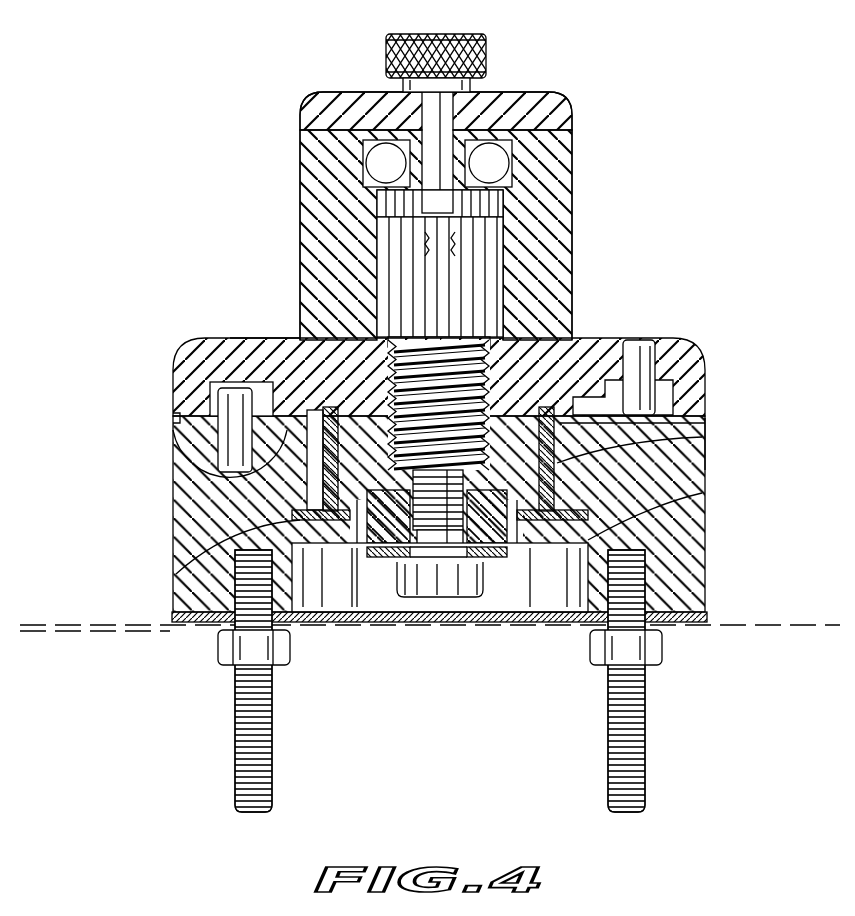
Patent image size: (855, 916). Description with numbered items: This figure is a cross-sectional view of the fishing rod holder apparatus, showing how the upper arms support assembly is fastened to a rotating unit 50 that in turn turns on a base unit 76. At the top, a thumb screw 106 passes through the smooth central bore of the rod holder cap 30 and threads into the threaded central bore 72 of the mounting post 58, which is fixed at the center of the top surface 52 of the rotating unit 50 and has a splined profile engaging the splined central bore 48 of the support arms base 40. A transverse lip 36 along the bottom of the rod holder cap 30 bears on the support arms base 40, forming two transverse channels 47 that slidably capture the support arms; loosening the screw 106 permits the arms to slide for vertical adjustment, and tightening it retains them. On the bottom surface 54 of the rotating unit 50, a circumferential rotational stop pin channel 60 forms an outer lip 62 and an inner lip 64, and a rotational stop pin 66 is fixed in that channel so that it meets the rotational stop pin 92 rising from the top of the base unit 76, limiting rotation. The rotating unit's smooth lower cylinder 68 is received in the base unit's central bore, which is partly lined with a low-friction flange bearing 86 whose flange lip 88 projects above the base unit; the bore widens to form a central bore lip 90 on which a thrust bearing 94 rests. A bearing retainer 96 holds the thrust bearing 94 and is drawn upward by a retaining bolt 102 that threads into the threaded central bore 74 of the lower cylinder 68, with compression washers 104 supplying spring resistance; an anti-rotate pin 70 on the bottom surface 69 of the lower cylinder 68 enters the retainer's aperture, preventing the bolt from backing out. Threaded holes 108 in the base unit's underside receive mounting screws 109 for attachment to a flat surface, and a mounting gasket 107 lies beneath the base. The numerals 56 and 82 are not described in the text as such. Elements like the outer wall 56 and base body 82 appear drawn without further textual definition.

The thumb screw 106 is at (488, 51).
The transverse channels 47 is at (456, 150).
The transverse lip 36 is at (558, 106).
The rod holder cap 30 is at (575, 110).
The threaded central bore 72 is at (448, 248).
The support arms base 40 is at (575, 212).
The splined central bore 48 is at (380, 212).
The mounting post 58 is at (393, 278).
The flange lip 88 is at (571, 410).
The top surface 52 is at (246, 336).
The rotating unit 50 is at (215, 350).
The outer wall 56 is at (164, 375).
The rotational stop pin 92 is at (215, 412).
The outer lip 62 is at (180, 443).
The inner lip 64 is at (222, 478).
The base body 82 is at (167, 505).
The base unit 76 is at (188, 537).
The anti-rotate pin 70 is at (232, 540).
The mounting gasket 107 is at (172, 615).
The rotational stop pin 66 is at (660, 338).
The rotational stop pin channel 60 is at (708, 420).
The bottom surface 54 is at (709, 426).
The lower cylinder 68 is at (706, 443).
The flange bearing 86 is at (660, 470).
The thrust bearing 94 is at (640, 500).
The central bore lip 90 is at (650, 540).
The threaded holes 108 is at (650, 572).
The mounting screws 109 is at (235, 790).
The compression washers 104 is at (385, 557).
The retaining bolt 102 is at (410, 560).
The threaded central bore 74 is at (437, 597).
The bearing retainer 96 is at (496, 597).
The bottom surface 69 is at (525, 555).